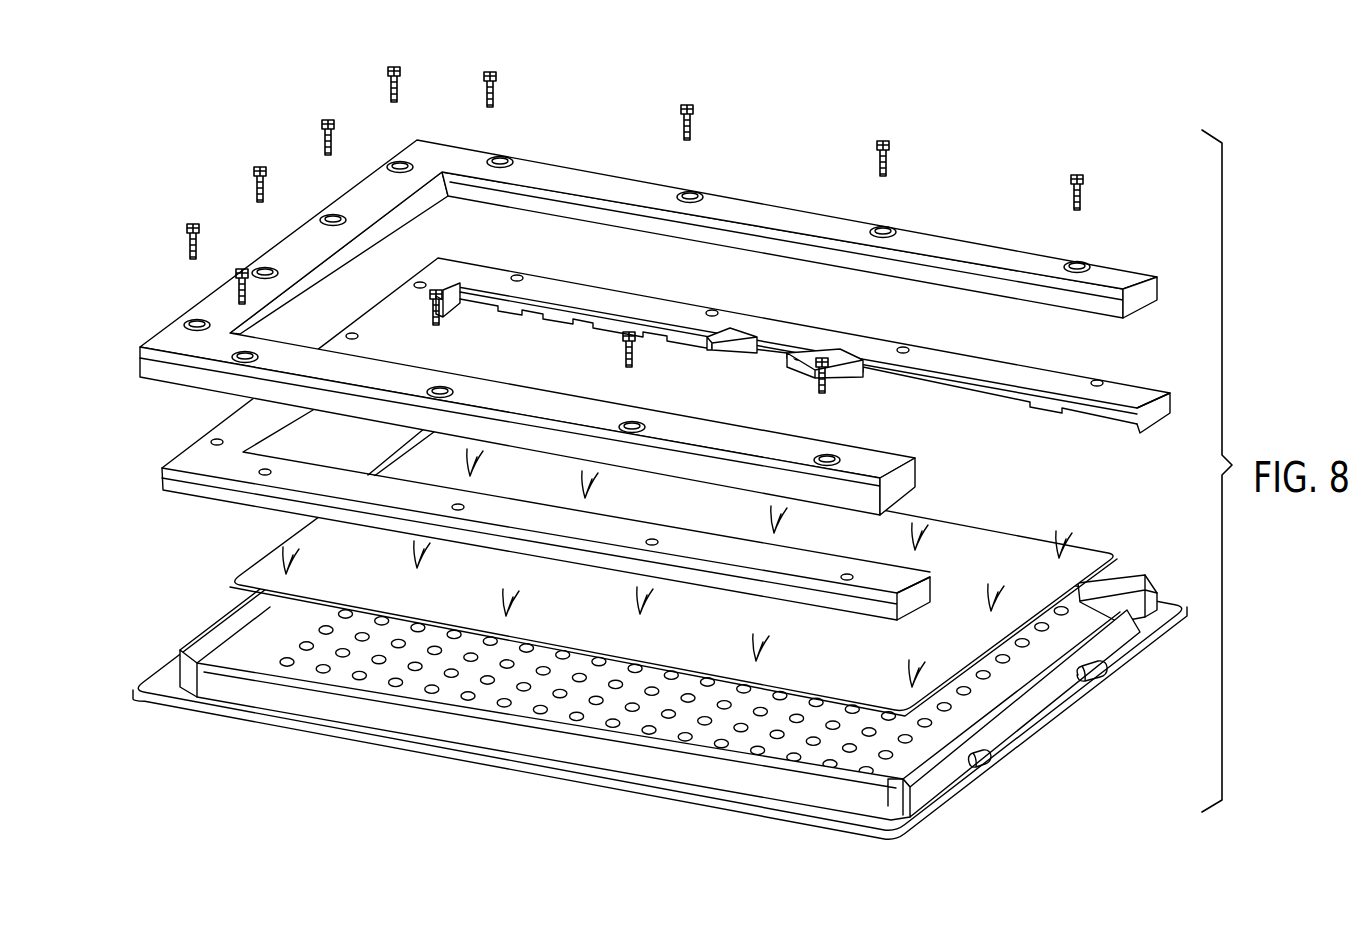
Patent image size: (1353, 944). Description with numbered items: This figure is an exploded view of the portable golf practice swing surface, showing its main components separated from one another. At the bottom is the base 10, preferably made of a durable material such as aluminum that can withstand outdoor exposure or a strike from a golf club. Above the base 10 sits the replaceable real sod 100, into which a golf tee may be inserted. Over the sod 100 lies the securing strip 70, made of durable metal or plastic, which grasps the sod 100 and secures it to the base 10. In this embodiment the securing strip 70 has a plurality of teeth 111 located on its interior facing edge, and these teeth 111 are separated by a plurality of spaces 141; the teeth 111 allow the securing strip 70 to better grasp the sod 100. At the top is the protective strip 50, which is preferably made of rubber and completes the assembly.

The base 10 is at (408, 725).
The replaceable real sod 100 is at (958, 537).
The securing strip 70 is at (240, 493).
The teeth 111 is at (753, 353).
The spaces 141 is at (800, 357).
The protective strip 50 is at (210, 380).